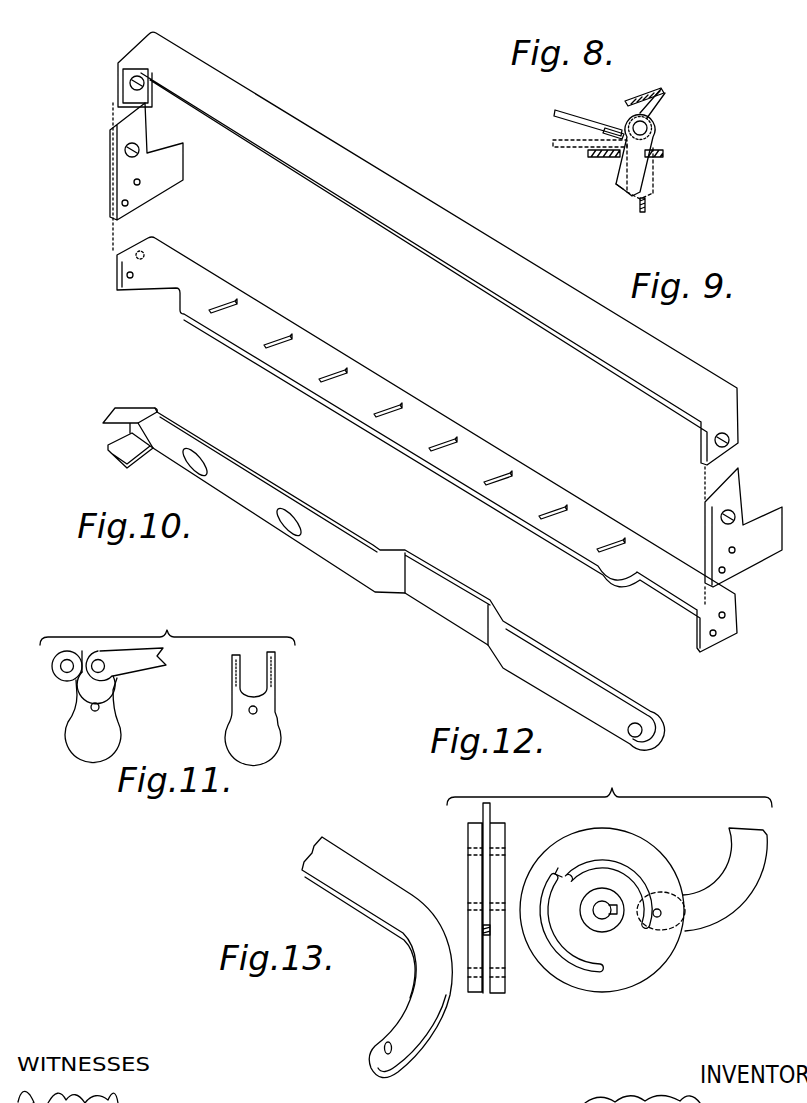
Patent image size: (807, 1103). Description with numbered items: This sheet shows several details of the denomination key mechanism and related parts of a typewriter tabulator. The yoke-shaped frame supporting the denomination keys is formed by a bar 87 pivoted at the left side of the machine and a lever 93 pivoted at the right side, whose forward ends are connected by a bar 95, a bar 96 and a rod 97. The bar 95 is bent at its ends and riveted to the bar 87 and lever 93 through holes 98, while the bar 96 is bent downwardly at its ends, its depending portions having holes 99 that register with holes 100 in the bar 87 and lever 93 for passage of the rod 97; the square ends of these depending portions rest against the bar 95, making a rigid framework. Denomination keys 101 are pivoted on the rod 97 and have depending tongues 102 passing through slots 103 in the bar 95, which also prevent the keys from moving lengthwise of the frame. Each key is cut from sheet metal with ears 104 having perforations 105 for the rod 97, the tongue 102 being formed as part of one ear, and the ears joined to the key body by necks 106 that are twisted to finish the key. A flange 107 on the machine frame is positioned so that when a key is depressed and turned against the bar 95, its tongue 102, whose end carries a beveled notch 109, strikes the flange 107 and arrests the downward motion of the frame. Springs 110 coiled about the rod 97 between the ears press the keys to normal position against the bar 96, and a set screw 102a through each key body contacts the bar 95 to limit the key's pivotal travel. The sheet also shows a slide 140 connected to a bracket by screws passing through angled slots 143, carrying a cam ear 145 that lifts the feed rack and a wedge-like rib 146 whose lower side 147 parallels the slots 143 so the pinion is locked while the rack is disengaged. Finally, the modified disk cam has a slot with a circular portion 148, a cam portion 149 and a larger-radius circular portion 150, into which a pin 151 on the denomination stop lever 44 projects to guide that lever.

In FIG. 12, the denomination stop 44 is at (490, 808).
In FIG. 13, the denomination stop 44 is at (436, 1030).
In FIG. 8, the bar 87 is at (178, 171).
In FIG. 8, the lever 93 is at (771, 556).
In FIG. 8, the bar 95 is at (343, 418).
In FIG. 9, the bar 95 is at (665, 153).
In FIG. 8, the bar 96 is at (424, 238).
In FIG. 9, the bar 96 is at (637, 92).
In FIG. 9, the rod 97 is at (647, 128).
In FIG. 8, the holes 98 is at (127, 206).
In FIG. 8, the holes 99 is at (130, 88).
In FIG. 8, the holes 100 is at (124, 155).
In FIG. 9, the denomination keys 101 is at (556, 119).
In FIG. 11, the denomination keys 101 is at (122, 728).
In FIG. 9, the tongue 102 is at (620, 173).
In FIG. 11, the tongue 102 is at (164, 652).
In FIG. 9, the set screw 102a is at (611, 128).
In FIG. 8, the slots 103 is at (229, 304).
In FIG. 9, the slots 103 is at (648, 162).
In FIG. 11, the ears 104 is at (54, 667).
In FIG. 11, the perforations 105 is at (60, 676).
In FIG. 11, the necks 106 is at (76, 688).
In FIG. 9, the flange 107 is at (647, 210).
In FIG. 9, the notches 109 is at (623, 190).
In FIG. 9, the springs 110 is at (663, 99).
In FIG. 10, the slide 140 is at (366, 577).
In FIG. 10, the slots 143 is at (196, 453).
In FIG. 10, the cam ear 145 is at (123, 415).
In FIG. 10, the rib 146 is at (160, 421).
In FIG. 10, the lower side 147 is at (107, 455).
In FIG. 12, the circular portion 148 is at (617, 857).
In FIG. 12, the cam portion 149 is at (553, 881).
In FIG. 12, the circular portion 150 is at (590, 975).
In FIG. 12, the pin 151 is at (661, 911).
In FIG. 13, the pin 151 is at (382, 1049).